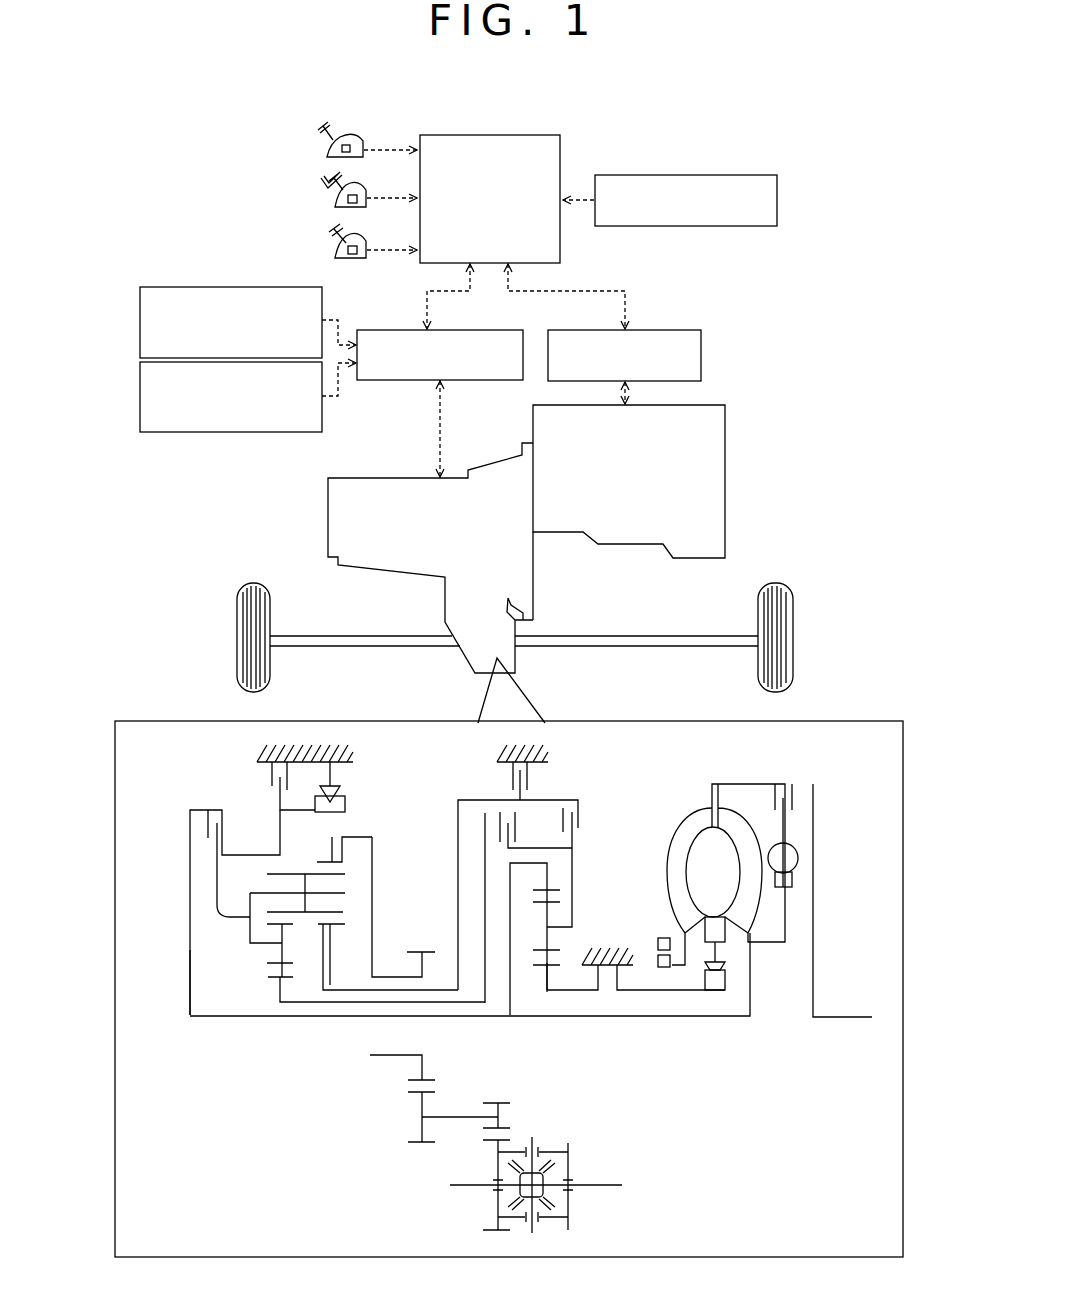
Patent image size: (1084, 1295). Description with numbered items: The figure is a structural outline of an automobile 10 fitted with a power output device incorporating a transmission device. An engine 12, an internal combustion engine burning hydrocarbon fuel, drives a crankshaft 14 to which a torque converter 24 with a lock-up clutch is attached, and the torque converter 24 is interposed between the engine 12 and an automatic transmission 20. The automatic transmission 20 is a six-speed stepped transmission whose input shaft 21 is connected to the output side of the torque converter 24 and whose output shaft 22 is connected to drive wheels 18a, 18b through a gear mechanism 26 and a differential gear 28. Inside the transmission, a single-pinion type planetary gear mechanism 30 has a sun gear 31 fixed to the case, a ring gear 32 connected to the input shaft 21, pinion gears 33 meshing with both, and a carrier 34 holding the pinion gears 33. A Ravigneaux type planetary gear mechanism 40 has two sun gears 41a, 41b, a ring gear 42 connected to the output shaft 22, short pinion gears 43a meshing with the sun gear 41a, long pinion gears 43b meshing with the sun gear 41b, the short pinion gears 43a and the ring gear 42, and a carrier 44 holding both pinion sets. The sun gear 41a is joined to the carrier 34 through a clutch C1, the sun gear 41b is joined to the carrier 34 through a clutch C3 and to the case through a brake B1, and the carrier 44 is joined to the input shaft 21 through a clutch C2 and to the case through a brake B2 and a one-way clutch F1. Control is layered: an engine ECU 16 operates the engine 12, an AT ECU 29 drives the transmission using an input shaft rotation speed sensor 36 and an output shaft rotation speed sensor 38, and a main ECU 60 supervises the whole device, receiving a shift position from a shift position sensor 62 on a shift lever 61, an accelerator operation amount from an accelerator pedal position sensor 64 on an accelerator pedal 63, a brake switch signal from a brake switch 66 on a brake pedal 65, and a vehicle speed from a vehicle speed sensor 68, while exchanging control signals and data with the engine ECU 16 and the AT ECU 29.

The automobile 10 is at (204, 128).
The engine 12 is at (725, 478).
The crankshaft 14 is at (843, 1017).
The engine ECU 16 is at (701, 355).
The drive wheel 18a is at (793, 637).
The drive wheel 18b is at (237, 638).
The automatic transmission 20 is at (328, 520).
The input shaft 21 is at (728, 1017).
The output shaft 22 is at (396, 975).
The torque converter 24 is at (705, 806).
The gear mechanism 26 is at (448, 1106).
The differential gear 28 is at (548, 1131).
The AT ECU 29 is at (392, 330).
The single-pinion type planetary gear mechanism 30 is at (620, 853).
The sun gear 31 is at (540, 966).
The ring gear 32 is at (552, 890).
The pinion gears 33 is at (548, 942).
The carrier 34 is at (575, 920).
The input shaft rotation speed sensor 36 is at (140, 330).
The output shaft rotation speed sensor 38 is at (140, 392).
The Ravigneaux type planetary gear mechanism 40 is at (237, 985).
The sun gear 41a is at (270, 978).
The sun gear 41b is at (323, 927).
The ring gear 42 is at (342, 837).
The short pinion gears 43a is at (268, 960).
The long pinion gears 43b is at (272, 872).
The carrier 44 is at (205, 904).
The main ECU 60 is at (510, 135).
The shift lever 61 is at (333, 138).
The shift position sensor 62 is at (329, 154).
The accelerator pedal 63 is at (332, 181).
The accelerator pedal position sensor 64 is at (338, 203).
The brake pedal 65 is at (336, 238).
The brake switch 66 is at (338, 254).
The vehicle speed sensor 68 is at (777, 200).
The brake B1 is at (530, 785).
The brake B2 is at (272, 780).
The clutch C1 is at (498, 815).
The clutch C2 is at (208, 808).
The clutch C3 is at (578, 822).
The one-way clutch F1 is at (338, 782).